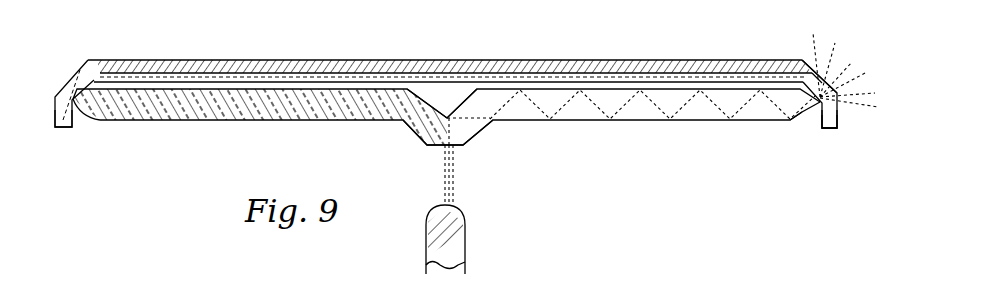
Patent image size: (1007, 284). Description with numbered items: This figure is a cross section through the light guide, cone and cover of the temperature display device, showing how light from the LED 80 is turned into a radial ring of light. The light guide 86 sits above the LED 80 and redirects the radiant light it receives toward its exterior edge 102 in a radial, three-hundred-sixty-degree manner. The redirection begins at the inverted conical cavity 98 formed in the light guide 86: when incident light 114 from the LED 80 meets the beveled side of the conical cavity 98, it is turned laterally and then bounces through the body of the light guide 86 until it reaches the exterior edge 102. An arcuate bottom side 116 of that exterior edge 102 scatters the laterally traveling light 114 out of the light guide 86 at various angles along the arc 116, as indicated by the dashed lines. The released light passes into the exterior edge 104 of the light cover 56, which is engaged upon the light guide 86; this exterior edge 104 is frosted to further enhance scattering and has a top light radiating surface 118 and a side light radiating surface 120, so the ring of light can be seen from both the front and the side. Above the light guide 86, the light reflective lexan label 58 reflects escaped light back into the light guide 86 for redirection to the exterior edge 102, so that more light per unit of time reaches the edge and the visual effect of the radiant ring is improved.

The light cover 56 is at (450, 52).
The light reflective lexan label 58 is at (252, 72).
The conical cavity 98 is at (448, 98).
The exterior edge of the light cover 104 is at (80, 78).
The exterior edge of the light guide 102 is at (80, 117).
The side light radiating surface 120 is at (836, 124).
The top light radiating surface 118 is at (818, 72).
The light guide 86 is at (265, 120).
The arcuate bottom side 116 is at (98, 120).
The incident light 114 is at (506, 101).
The LED 80 is at (426, 234).